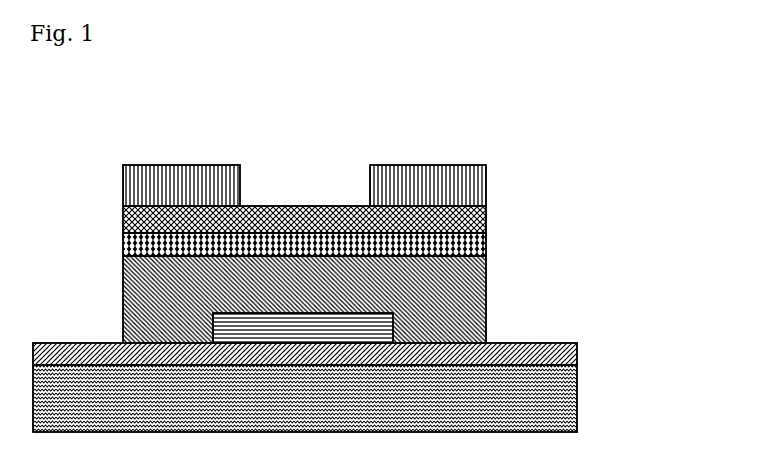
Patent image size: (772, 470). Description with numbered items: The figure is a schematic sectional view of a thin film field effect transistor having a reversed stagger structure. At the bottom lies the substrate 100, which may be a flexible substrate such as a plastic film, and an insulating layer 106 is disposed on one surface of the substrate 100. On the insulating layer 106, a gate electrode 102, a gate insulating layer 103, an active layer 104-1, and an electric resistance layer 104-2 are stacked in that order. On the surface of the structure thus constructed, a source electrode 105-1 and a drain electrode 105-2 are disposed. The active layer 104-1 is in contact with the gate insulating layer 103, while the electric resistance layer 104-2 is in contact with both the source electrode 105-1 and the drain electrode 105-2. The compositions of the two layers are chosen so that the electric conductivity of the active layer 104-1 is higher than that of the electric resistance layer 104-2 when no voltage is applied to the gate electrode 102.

The substrate 100 is at (570, 410).
The insulating layer 106 is at (565, 358).
The gate electrode 102 is at (393, 327).
The gate insulating layer 103 is at (450, 283).
The active layer 104-1 is at (475, 243).
The electric resistance layer 104-2 is at (483, 217).
The source electrode 105-1 is at (222, 148).
The drain electrode 105-2 is at (415, 172).